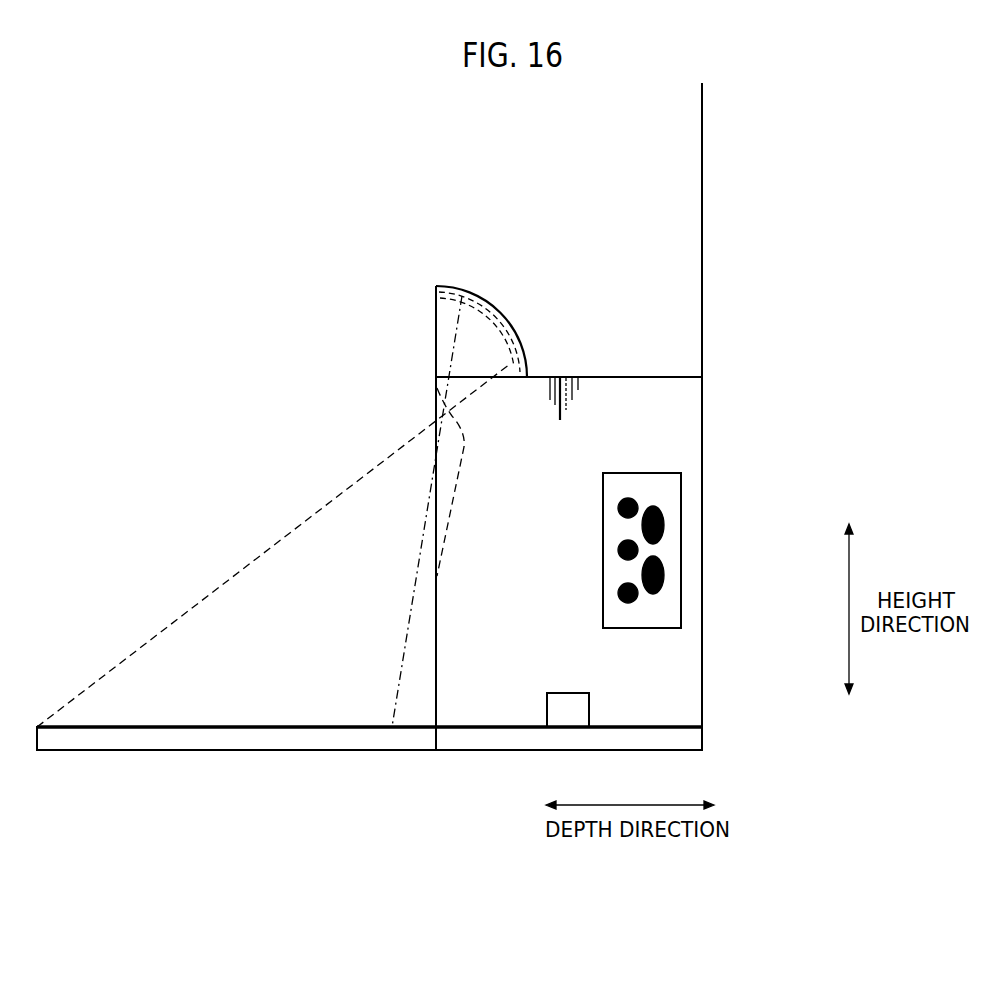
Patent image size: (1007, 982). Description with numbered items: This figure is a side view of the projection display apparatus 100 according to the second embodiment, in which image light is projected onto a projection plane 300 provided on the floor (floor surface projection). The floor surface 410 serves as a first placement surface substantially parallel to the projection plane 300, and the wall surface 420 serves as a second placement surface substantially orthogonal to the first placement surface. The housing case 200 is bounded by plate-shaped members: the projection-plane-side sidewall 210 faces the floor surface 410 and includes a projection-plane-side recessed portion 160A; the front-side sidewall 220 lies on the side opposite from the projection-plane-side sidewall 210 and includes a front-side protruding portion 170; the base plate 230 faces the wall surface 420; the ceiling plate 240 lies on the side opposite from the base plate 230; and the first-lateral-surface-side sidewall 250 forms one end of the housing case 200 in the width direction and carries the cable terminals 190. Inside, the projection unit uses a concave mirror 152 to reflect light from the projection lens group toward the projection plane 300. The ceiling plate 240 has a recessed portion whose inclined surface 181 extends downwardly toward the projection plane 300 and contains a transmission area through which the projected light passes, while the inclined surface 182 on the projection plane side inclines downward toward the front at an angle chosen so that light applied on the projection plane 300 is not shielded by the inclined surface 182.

The projection display apparatus 100 is at (345, 258).
The concave mirror 152 is at (497, 307).
The projection-plane-side recessed portion 160A is at (564, 693).
The front-side protruding portion 170 is at (447, 286).
The inclined surface 181 is at (455, 410).
The inclined surface 182 is at (470, 464).
The cable terminals 190 is at (682, 551).
The housing case 200 is at (434, 700).
The projection-plane-side sidewall 210 is at (478, 727).
The front-side sidewall 220 is at (585, 377).
The base plate 230 is at (703, 425).
The ceiling plate 240 is at (434, 640).
The first-lateral-surface-side sidewall 250 is at (637, 400).
The projection plane 300 is at (279, 727).
The floor surface 410 is at (537, 740).
The wall surface 420 is at (703, 214).